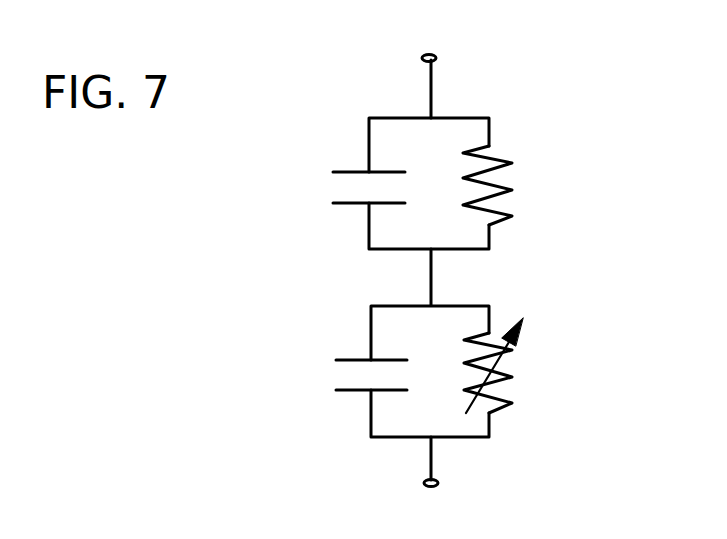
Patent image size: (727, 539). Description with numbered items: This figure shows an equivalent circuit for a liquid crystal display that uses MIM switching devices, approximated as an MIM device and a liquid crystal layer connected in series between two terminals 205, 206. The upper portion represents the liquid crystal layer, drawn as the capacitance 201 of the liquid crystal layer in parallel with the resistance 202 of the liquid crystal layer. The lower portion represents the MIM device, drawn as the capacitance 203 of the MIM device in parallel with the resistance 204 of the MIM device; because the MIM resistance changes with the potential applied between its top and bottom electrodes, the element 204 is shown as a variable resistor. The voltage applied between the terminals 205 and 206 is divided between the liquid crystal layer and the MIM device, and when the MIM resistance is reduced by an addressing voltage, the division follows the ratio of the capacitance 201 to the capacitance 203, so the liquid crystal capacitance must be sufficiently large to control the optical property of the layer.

The capacitance of the liquid crystal layer 201 is at (357, 200).
The resistance of the liquid crystal layer 202 is at (503, 185).
The capacitance of the MIM device 203 is at (353, 385).
The resistance of the MIM device 204 is at (503, 372).
The terminal 205 is at (437, 57).
The terminal 206 is at (438, 483).